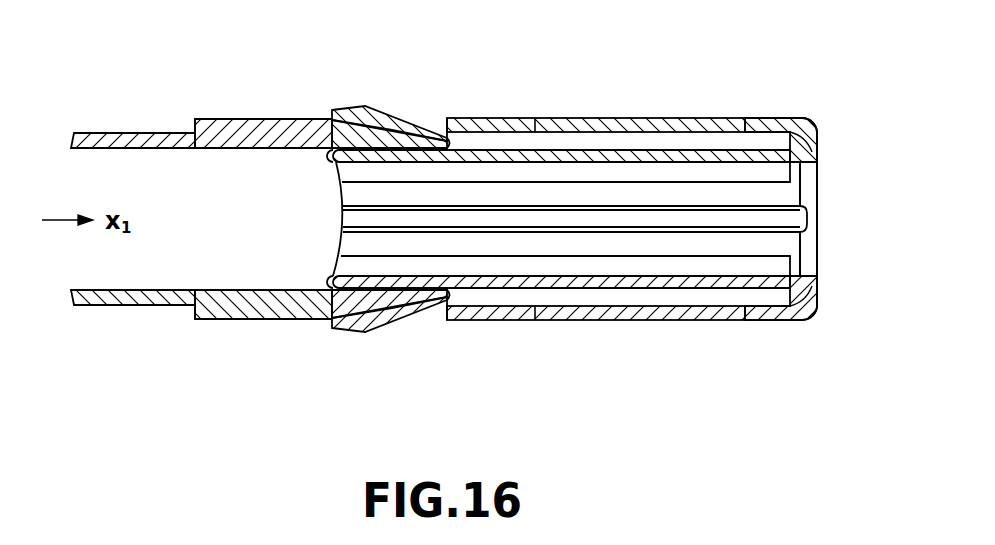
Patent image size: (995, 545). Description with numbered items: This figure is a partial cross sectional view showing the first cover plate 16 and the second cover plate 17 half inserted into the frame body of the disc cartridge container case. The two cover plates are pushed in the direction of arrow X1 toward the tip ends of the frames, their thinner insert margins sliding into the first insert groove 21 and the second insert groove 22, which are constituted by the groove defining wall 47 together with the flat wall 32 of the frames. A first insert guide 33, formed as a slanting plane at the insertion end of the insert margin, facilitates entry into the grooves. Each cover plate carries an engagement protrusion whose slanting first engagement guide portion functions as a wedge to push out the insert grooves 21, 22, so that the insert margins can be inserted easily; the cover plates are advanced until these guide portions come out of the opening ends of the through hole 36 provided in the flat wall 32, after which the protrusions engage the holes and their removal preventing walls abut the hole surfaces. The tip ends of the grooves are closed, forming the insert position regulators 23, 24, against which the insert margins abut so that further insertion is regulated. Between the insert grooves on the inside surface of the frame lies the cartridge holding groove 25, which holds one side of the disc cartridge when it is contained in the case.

The first cover plate 16 is at (257, 93).
The second cover plate 17 is at (256, 345).
The first insert guide 33 is at (445, 128).
The flat wall 32 is at (496, 122).
The through hole 36 is at (745, 121).
The insert position regulator 23 is at (806, 118).
The insert position regulator 24 is at (788, 320).
The cartridge holding groove 25 is at (808, 163).
The first insert groove 21 is at (510, 136).
The second insert groove 22 is at (508, 303).
The groove defining wall 47 is at (333, 153).